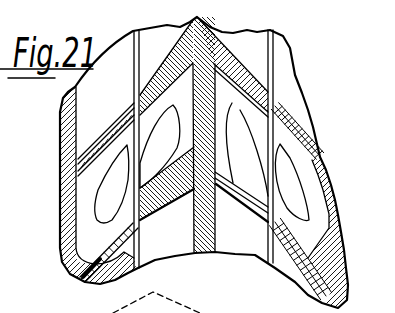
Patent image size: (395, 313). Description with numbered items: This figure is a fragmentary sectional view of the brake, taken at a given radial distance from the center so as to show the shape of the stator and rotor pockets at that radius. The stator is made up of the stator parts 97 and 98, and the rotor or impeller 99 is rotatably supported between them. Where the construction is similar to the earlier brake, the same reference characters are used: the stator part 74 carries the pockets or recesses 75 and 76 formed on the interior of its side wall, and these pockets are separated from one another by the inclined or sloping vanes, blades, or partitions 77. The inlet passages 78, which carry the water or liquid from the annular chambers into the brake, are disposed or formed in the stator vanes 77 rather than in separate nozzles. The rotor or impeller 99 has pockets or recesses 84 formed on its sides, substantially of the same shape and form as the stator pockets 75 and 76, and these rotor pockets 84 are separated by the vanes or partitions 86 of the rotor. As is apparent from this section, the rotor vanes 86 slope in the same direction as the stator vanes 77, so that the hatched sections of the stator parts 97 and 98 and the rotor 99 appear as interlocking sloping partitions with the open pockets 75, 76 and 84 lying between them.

The stator part 74 is at (321, 163).
The stator pocket 75 is at (74, 232).
The stator pocket 76 is at (286, 81).
The stator vane 77 is at (122, 108).
The inlet passage 78 is at (302, 132).
The rotor pocket 84 is at (165, 49).
The rotor vane 86 is at (262, 92).
The stator part 97 is at (52, 162).
The stator part 98 is at (354, 190).
The rotor 99 is at (207, 25).